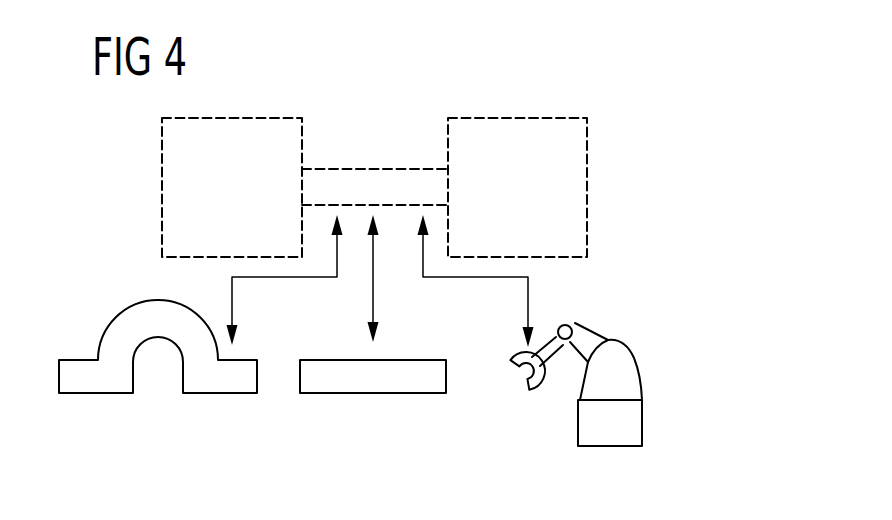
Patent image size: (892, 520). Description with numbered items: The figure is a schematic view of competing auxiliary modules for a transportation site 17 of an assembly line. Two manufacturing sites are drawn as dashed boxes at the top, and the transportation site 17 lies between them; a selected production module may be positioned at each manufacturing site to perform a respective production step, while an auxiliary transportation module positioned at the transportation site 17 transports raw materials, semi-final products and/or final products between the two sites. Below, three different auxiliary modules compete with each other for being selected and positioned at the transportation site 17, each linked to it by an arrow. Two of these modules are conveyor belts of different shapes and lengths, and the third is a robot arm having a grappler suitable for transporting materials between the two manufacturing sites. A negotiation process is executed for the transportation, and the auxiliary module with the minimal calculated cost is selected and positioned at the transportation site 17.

The transportation site 17 is at (393, 169).